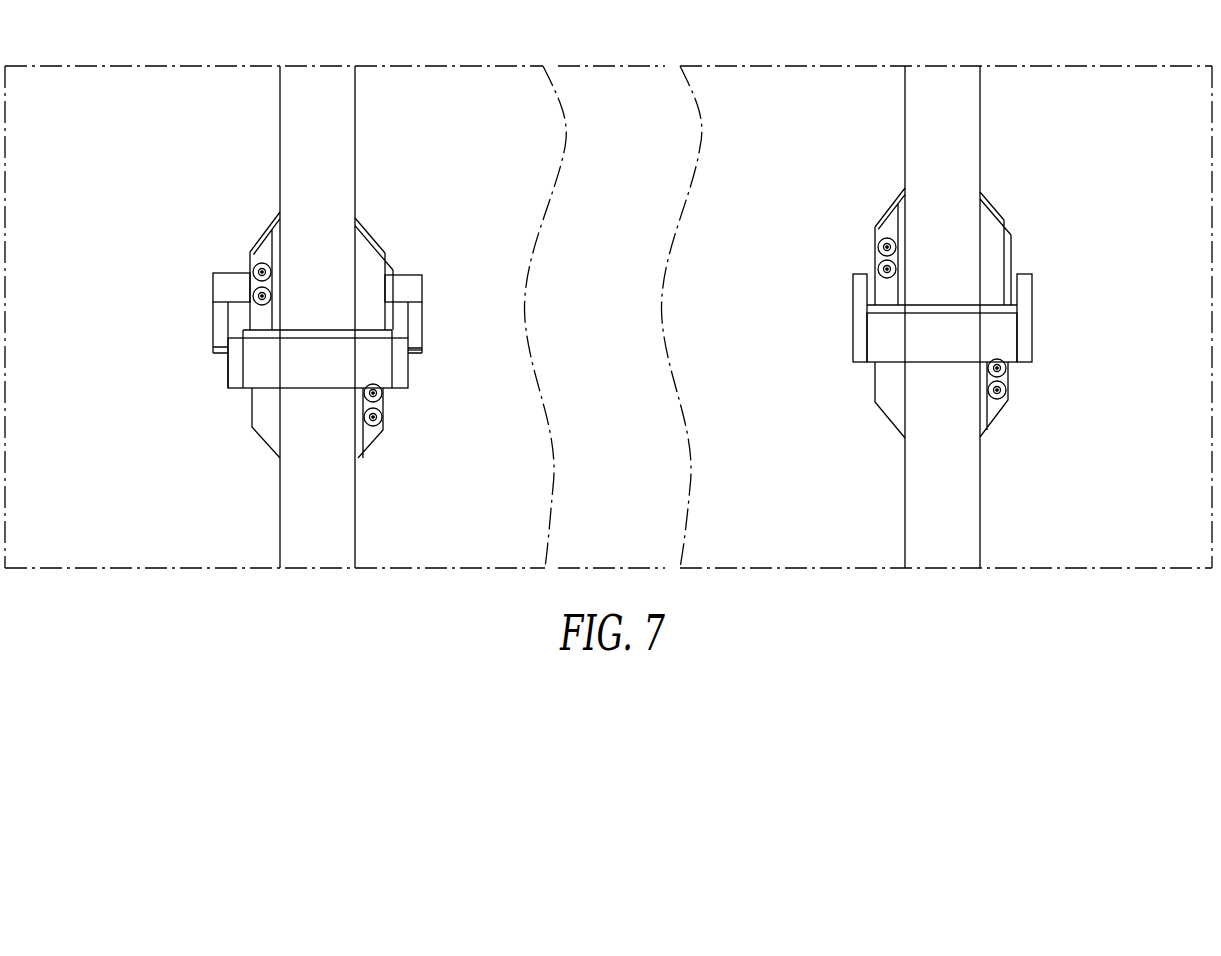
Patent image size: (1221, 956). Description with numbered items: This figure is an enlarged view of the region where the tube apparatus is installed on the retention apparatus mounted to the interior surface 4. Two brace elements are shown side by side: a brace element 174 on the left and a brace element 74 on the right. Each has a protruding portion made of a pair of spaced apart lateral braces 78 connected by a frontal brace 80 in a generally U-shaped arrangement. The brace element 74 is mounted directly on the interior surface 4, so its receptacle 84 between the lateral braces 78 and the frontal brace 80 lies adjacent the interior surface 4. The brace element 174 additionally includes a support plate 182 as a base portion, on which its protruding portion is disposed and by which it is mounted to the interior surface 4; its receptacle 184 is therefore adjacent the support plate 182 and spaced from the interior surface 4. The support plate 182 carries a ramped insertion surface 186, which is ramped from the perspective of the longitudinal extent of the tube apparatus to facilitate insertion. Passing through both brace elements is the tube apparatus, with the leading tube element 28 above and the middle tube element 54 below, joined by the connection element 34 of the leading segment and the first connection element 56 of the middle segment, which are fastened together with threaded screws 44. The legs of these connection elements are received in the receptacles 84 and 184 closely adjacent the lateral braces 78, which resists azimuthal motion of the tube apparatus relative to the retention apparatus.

The interior surface 4 is at (483, 82).
The leading tube element 28 is at (357, 113).
The connection element 34 is at (357, 246).
The threaded screws 44 is at (254, 297).
The middle tube element 54 is at (357, 492).
The first connection element 56 is at (373, 240).
The brace element 74 is at (1036, 288).
The lateral braces 78 is at (228, 370).
The frontal brace 80 is at (263, 390).
The receptacle 84 is at (1011, 285).
The brace element 174 is at (422, 272).
The support plate 182 is at (422, 312).
The receptacle 184 is at (388, 305).
The ramped insertion surface 186 is at (415, 353).